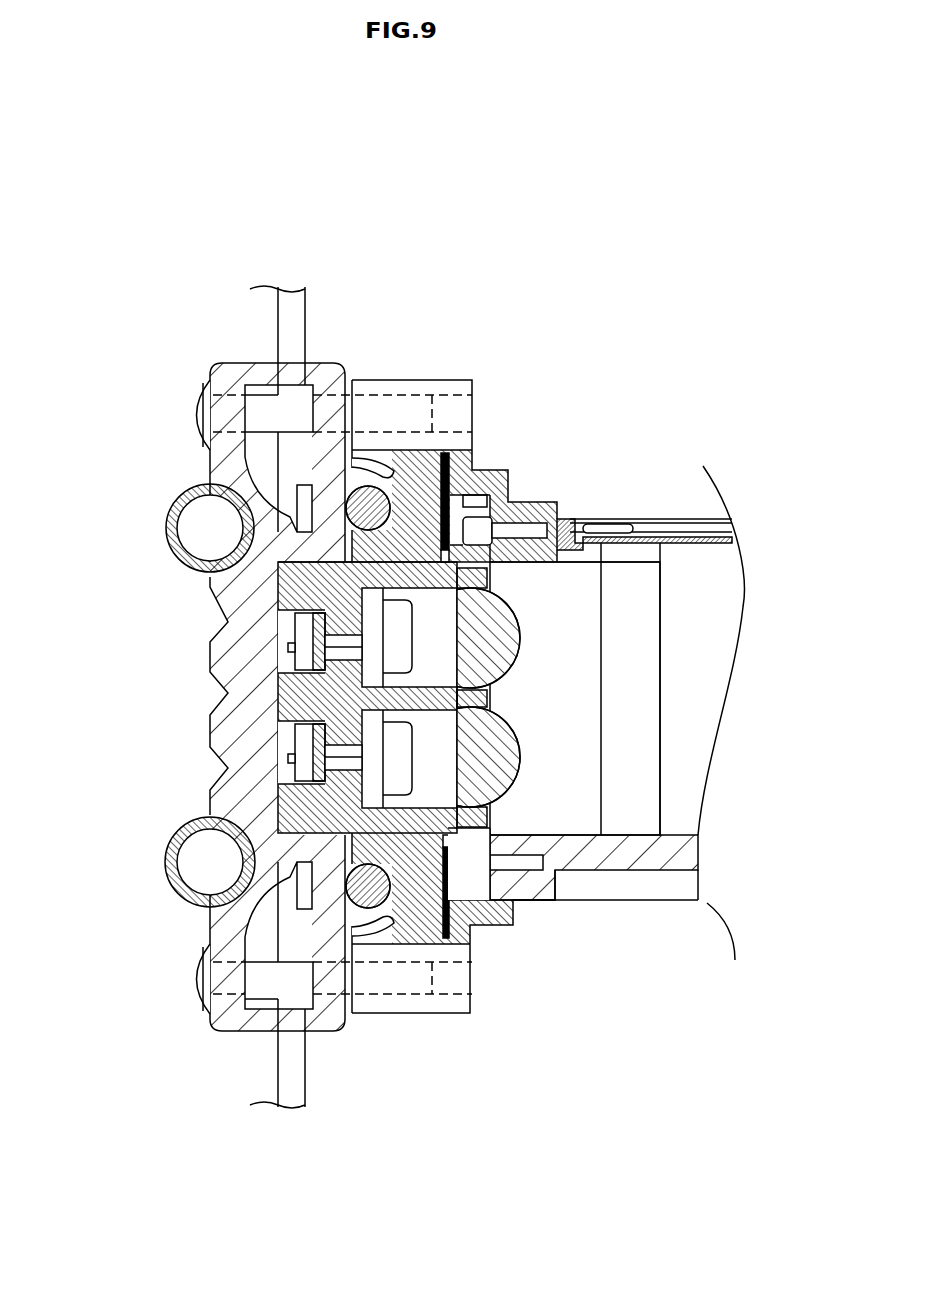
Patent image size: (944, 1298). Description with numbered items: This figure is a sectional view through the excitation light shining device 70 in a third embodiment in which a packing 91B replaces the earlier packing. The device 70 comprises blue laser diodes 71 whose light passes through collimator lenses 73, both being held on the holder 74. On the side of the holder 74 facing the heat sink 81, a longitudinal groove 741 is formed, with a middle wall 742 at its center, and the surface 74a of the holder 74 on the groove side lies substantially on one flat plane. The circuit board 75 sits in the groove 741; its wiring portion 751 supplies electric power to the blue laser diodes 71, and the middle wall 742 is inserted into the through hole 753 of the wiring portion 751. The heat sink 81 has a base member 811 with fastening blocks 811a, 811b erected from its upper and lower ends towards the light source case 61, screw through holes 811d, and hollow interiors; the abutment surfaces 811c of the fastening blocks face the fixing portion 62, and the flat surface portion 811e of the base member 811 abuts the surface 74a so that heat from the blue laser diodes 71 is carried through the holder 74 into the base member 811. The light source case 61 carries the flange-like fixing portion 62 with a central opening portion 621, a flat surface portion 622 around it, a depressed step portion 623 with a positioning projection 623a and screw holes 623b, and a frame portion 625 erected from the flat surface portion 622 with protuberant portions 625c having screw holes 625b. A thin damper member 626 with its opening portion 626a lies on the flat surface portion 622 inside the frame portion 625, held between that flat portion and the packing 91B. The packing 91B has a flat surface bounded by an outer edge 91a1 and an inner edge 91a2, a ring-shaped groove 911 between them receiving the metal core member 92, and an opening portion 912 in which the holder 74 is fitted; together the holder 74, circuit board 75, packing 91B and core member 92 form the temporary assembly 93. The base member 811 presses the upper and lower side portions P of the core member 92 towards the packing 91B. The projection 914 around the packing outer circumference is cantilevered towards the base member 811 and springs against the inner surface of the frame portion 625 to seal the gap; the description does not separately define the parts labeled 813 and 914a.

The excitation light shining device 70 is at (167, 804).
The blue laser diodes 71 is at (412, 637).
The collimator lenses 73 is at (522, 638).
The holder 74 is at (280, 692).
The surface of the holder 74a is at (282, 594).
The groove 741 is at (280, 800).
The middle wall 742 is at (290, 708).
The circuit board 75 is at (292, 620).
The wiring portion 751 is at (330, 645).
The through hole 753 is at (300, 728).
The heat sink 81 is at (208, 472).
The base member 811 is at (225, 655).
The fastening block 811a is at (305, 287).
The fastening block 811b is at (305, 1107).
The abutment surface 811c is at (345, 467).
The screw through hole 811d is at (235, 393).
The flat surface portion 811e is at (222, 712).
The guide ring 813 is at (168, 524).
The upper and lower side portions P is at (343, 507).
The core member 92 is at (372, 487).
The groove 911 is at (392, 470).
The opening portion 912 is at (445, 935).
The projection 914 is at (388, 936).
The spring leaf tip 914a is at (360, 935).
The outer edge 91a1 is at (345, 940).
The inner edge 91a2 is at (345, 840).
The packing 91B is at (472, 440).
The temporary assembly 93 is at (532, 779).
The light source case 61 is at (608, 517).
The fixing portion 62 is at (464, 381).
The opening portion 621 is at (500, 870).
The flat surface portion 622 is at (455, 462).
The step portion 623 is at (497, 520).
The positioning projection 623a is at (481, 520).
The screw hole 623b is at (522, 541).
The frame portion 625 is at (398, 412).
The screw hole 625b is at (372, 393).
The protuberant portion 625c is at (455, 381).
The damper member 626 is at (448, 468).
The opening portion 626a is at (447, 888).